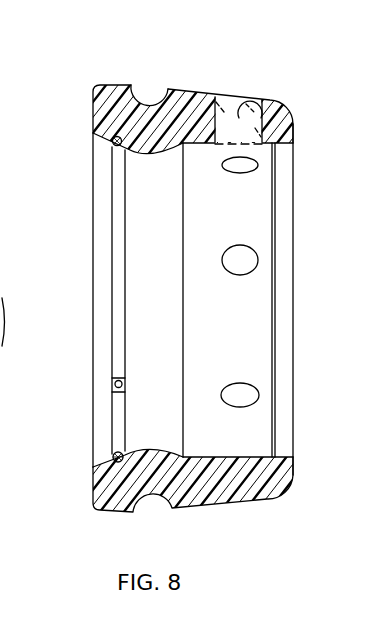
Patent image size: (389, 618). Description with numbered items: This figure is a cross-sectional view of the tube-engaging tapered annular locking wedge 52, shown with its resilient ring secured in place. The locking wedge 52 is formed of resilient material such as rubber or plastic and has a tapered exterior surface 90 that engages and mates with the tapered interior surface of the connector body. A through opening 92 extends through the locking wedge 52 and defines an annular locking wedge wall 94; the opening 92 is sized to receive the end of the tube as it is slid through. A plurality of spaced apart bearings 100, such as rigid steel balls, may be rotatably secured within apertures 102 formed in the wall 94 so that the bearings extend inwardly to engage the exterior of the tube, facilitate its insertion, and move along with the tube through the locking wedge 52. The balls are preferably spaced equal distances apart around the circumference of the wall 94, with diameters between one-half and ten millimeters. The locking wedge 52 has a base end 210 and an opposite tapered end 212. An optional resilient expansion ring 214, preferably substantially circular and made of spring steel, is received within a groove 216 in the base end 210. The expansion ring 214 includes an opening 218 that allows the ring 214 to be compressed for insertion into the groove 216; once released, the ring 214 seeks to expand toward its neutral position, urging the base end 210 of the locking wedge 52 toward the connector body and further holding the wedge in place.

The tapered locking wedge 52 is at (175, 102).
The tapered exterior surface 90 is at (247, 500).
The through opening 92 is at (236, 317).
The annular locking wedge wall 94 is at (119, 98).
The bearings 100 is at (219, 110).
The apertures 102 is at (246, 97).
The base end 210 is at (100, 103).
The tapered end 212 is at (312, 118).
The resilient expansion ring 214 is at (114, 195).
The groove 216 is at (113, 145).
The opening 218 is at (104, 378).